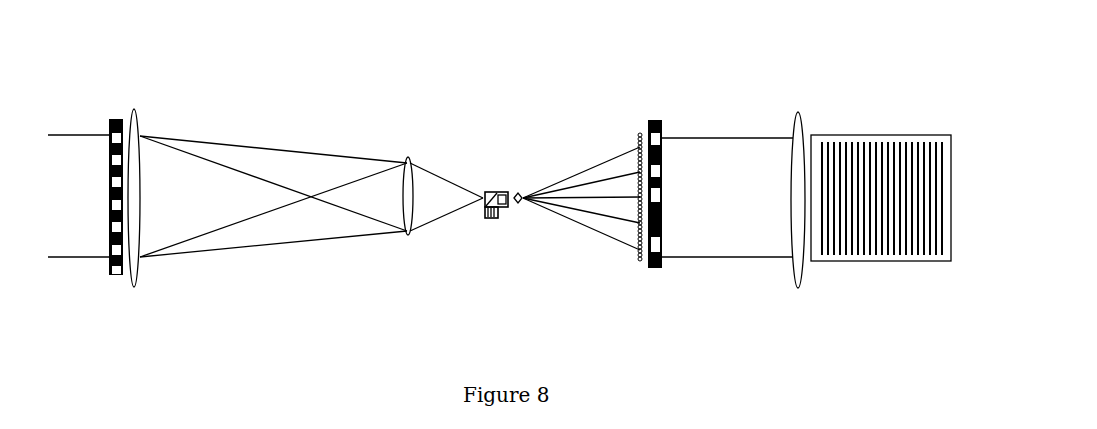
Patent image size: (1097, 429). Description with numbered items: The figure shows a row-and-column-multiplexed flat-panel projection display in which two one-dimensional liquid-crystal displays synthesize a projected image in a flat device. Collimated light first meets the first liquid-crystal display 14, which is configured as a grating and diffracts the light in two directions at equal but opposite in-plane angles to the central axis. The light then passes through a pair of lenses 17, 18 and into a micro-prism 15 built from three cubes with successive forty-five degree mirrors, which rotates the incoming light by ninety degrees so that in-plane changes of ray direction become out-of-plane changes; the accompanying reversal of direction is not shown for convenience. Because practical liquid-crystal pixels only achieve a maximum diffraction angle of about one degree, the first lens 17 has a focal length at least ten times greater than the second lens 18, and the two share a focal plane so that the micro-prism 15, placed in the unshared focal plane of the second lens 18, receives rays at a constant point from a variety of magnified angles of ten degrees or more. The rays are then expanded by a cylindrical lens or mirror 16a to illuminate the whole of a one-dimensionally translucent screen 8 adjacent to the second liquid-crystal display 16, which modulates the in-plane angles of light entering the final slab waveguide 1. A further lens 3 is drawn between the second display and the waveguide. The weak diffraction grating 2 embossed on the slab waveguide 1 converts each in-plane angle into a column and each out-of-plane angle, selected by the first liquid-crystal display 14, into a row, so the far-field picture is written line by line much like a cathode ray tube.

The slab waveguide 1 is at (883, 266).
The weak diffraction grating 2 is at (918, 252).
The lens 3 is at (803, 274).
The one-dimensionally translucent screen 8 is at (633, 141).
The first liquid-crystal display 14 is at (118, 284).
The micro-prism 15 is at (497, 226).
The second liquid-crystal display 16 is at (670, 126).
The cylindrical lens or mirror 16a is at (522, 186).
The first lens 17 is at (140, 276).
The second lens 18 is at (407, 241).